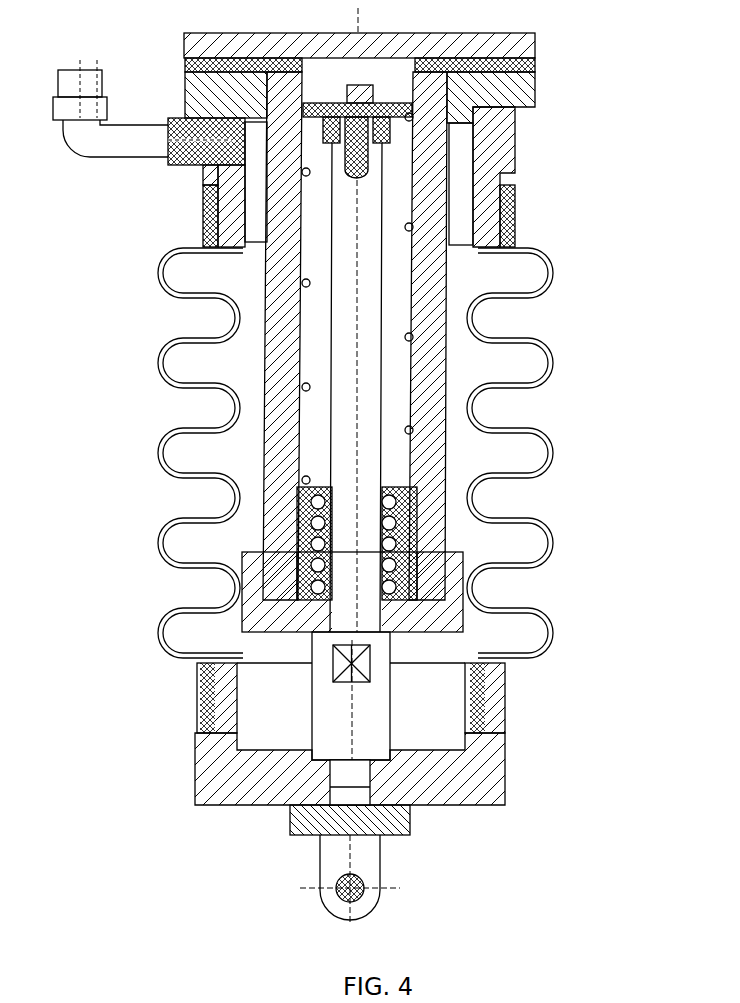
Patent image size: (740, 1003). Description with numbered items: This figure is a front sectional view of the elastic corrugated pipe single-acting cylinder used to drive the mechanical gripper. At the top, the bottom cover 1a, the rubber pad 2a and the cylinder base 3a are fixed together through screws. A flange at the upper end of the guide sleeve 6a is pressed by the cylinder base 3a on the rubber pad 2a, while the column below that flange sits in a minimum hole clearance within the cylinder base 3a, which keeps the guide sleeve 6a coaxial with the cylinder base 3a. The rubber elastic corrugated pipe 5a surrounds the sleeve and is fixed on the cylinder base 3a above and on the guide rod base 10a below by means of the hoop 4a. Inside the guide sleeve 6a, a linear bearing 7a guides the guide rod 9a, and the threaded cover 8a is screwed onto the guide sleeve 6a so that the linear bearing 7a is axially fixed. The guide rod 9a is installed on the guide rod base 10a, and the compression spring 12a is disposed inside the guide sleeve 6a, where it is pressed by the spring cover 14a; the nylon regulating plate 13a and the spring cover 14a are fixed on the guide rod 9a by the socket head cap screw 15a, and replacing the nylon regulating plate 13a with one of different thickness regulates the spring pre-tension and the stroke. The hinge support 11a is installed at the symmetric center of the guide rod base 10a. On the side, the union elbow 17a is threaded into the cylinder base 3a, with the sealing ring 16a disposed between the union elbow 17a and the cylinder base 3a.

The bottom cover 1a is at (537, 65).
The rubber pad 2a is at (542, 107).
The cylinder base 3a is at (515, 162).
The hoop 4a is at (510, 210).
The elastic corrugated pipe 5a is at (505, 285).
The guide sleeve 6a is at (435, 335).
The linear bearing 7a is at (503, 603).
The threaded cover 8a is at (415, 605).
The guide rod 9a is at (370, 668).
The guide rod base 10a is at (430, 797).
The hinge support 11a is at (310, 838).
The compression spring 12a is at (265, 410).
The nylon regulating plate 13a is at (205, 228).
The spring cover 14a is at (207, 187).
The socket head cap screw 15a is at (205, 165).
The sealing ring 16a is at (203, 100).
The union elbow 17a is at (80, 70).